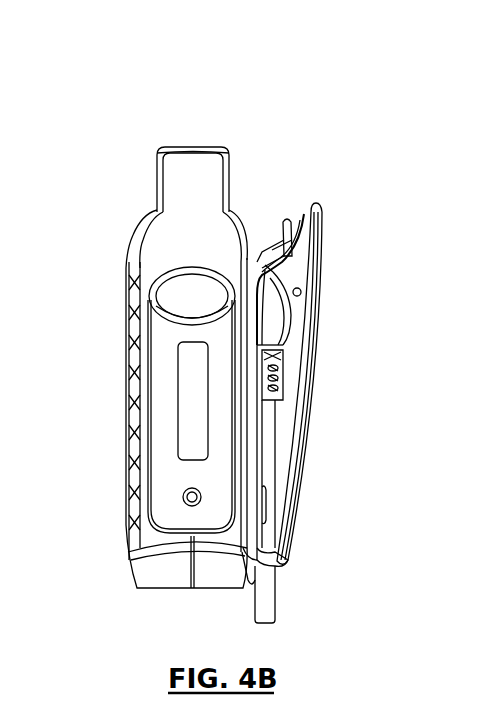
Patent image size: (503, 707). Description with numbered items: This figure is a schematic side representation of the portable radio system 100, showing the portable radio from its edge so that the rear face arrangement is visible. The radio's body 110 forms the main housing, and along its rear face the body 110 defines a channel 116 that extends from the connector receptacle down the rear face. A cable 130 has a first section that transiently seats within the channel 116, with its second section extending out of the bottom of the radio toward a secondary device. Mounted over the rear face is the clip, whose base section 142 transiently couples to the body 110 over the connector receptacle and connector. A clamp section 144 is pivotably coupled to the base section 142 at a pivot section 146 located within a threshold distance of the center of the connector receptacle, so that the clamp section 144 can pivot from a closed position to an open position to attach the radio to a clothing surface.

The portable radio system 100 is at (338, 108).
The body 110 is at (175, 560).
The channel 116 is at (258, 452).
The cable 130 is at (266, 582).
The base section 142 is at (275, 281).
The clamp section 144 is at (288, 378).
The pivot section 146 is at (302, 292).